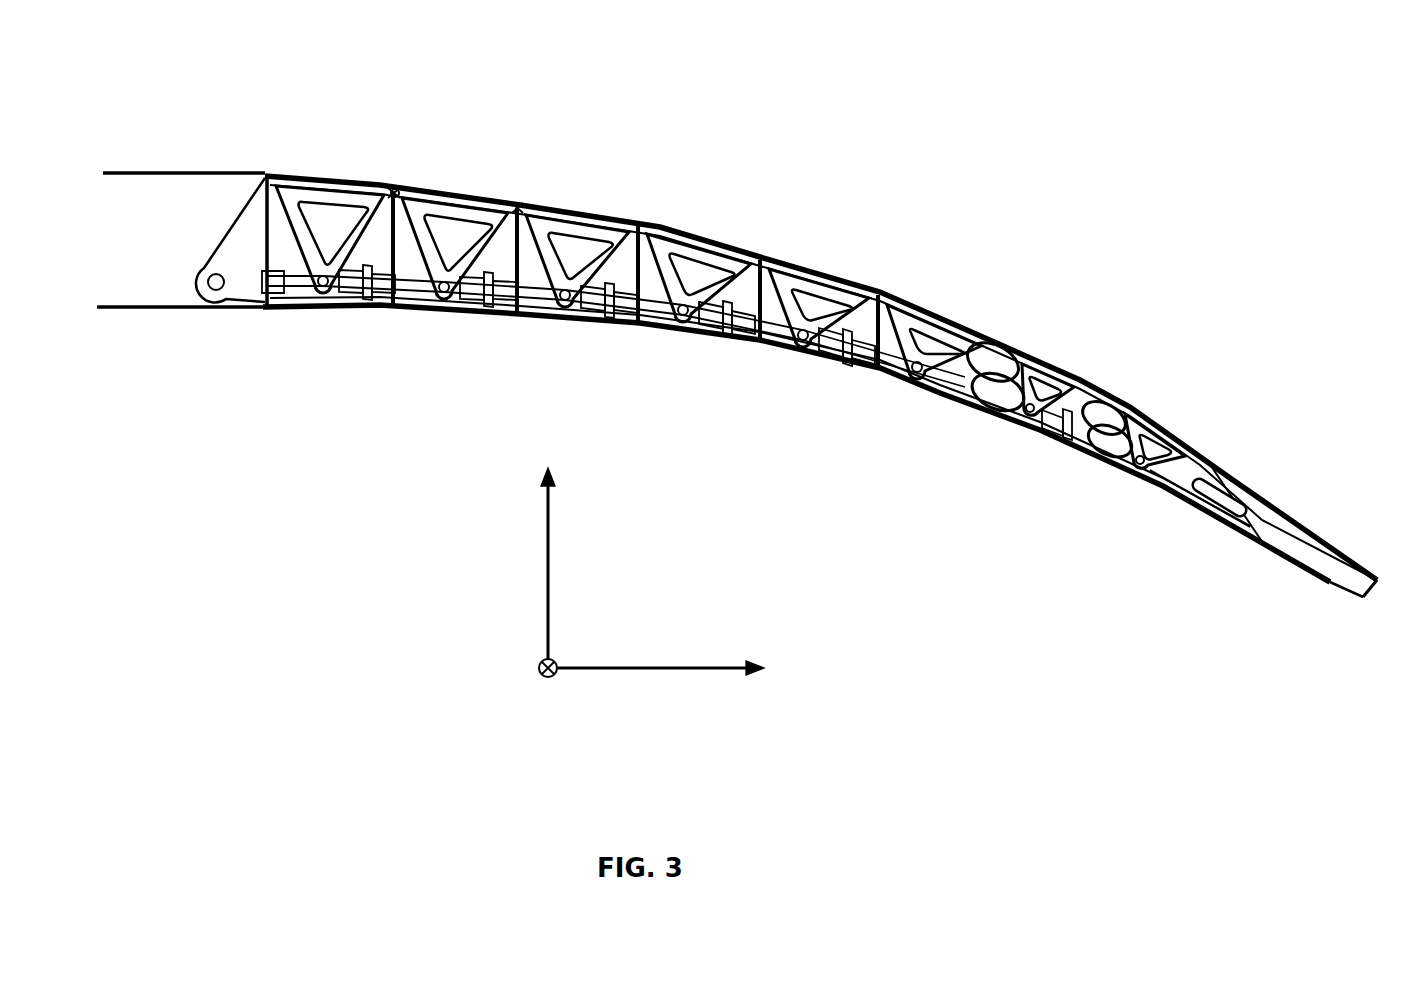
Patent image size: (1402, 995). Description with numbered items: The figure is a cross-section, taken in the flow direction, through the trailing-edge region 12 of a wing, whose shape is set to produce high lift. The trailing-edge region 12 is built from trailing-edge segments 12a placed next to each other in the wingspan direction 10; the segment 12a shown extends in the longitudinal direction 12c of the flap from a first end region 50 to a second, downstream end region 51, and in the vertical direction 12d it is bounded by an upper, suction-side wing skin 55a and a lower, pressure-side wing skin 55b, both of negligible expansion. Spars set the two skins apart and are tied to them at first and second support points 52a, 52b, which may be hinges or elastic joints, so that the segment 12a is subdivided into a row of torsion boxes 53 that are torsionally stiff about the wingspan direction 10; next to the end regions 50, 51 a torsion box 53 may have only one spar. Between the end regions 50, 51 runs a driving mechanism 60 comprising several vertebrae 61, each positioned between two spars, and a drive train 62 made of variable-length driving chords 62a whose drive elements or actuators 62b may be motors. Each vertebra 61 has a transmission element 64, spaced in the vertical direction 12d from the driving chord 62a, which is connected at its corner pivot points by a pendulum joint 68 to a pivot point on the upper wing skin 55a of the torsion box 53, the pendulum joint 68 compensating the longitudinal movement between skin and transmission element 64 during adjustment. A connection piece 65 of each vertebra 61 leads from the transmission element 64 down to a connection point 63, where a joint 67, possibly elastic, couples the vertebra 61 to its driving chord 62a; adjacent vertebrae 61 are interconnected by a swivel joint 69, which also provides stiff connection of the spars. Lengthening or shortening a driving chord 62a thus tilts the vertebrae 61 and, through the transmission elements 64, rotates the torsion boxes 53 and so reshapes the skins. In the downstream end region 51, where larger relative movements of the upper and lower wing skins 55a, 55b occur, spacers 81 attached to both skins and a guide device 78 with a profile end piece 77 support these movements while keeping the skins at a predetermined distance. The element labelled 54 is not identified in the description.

The wingspan direction 10 is at (530, 678).
The trailing-edge region 12 is at (820, 344).
The trailing-edge segment 12a is at (820, 344).
The longitudinal direction 12c is at (667, 686).
The vertical direction 12d is at (522, 563).
The first end region 50 is at (194, 152).
The second end region 51 is at (1202, 375).
The first support point 52a is at (400, 192).
The second support point 52b is at (390, 307).
The torsion box 53 is at (697, 268).
The hinge joint 54 is at (393, 182).
The upper wing skin 55a is at (790, 250).
The lower wing skin 55b is at (783, 347).
The driving mechanism 60 is at (697, 385).
The vertebra 61 is at (240, 303).
The drive train 62 is at (652, 330).
The driving chord 62a is at (537, 313).
The actuator 62b is at (610, 325).
The connection point 63 is at (311, 314).
The transmission element 64 is at (302, 205).
The connection piece 65 is at (345, 238).
The joint 67 is at (270, 303).
The pendulum joint 68 is at (455, 173).
The swivel joint 69 is at (518, 206).
The end piece 77 is at (1297, 532).
The guide device 78 is at (1205, 462).
The spacer 81 is at (1002, 400).